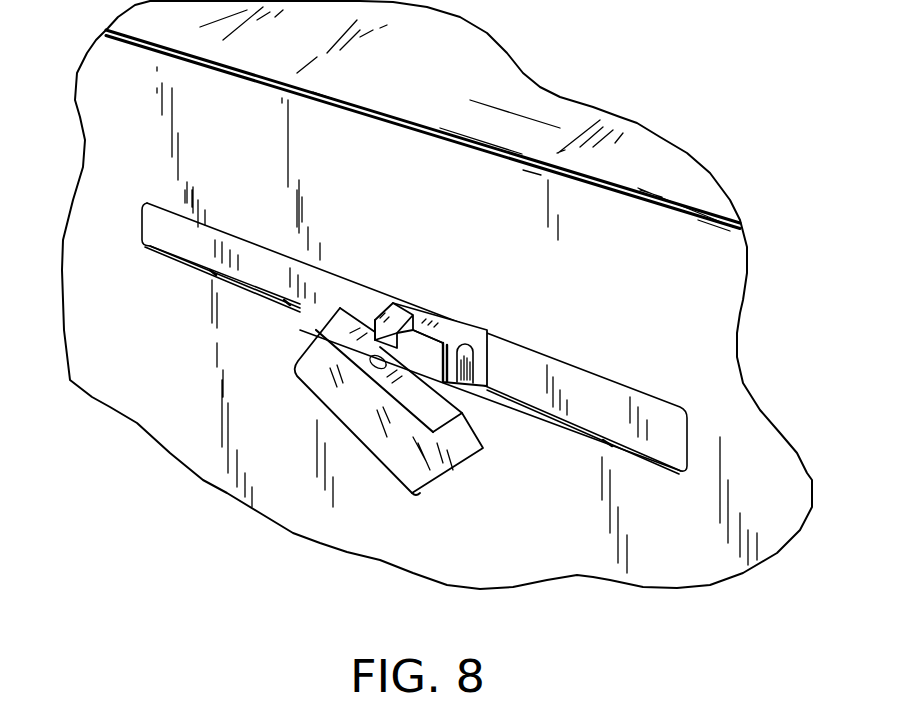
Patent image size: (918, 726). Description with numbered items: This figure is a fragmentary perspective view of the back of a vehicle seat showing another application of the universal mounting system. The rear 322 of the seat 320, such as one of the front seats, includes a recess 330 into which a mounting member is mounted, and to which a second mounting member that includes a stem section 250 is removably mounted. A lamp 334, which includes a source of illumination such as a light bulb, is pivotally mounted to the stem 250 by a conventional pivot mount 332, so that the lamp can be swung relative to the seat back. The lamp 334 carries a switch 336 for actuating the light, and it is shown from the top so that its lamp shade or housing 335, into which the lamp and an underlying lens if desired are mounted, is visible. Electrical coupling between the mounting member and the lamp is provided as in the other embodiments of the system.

The seat 320 is at (716, 162).
The rear of seat 322 is at (706, 234).
The recess 330 is at (617, 364).
The pivot mount 332 is at (405, 330).
The stem 250 is at (482, 353).
The lamp 334 is at (487, 444).
The lamp shade or housing 335 is at (318, 392).
The switch 336 is at (372, 360).